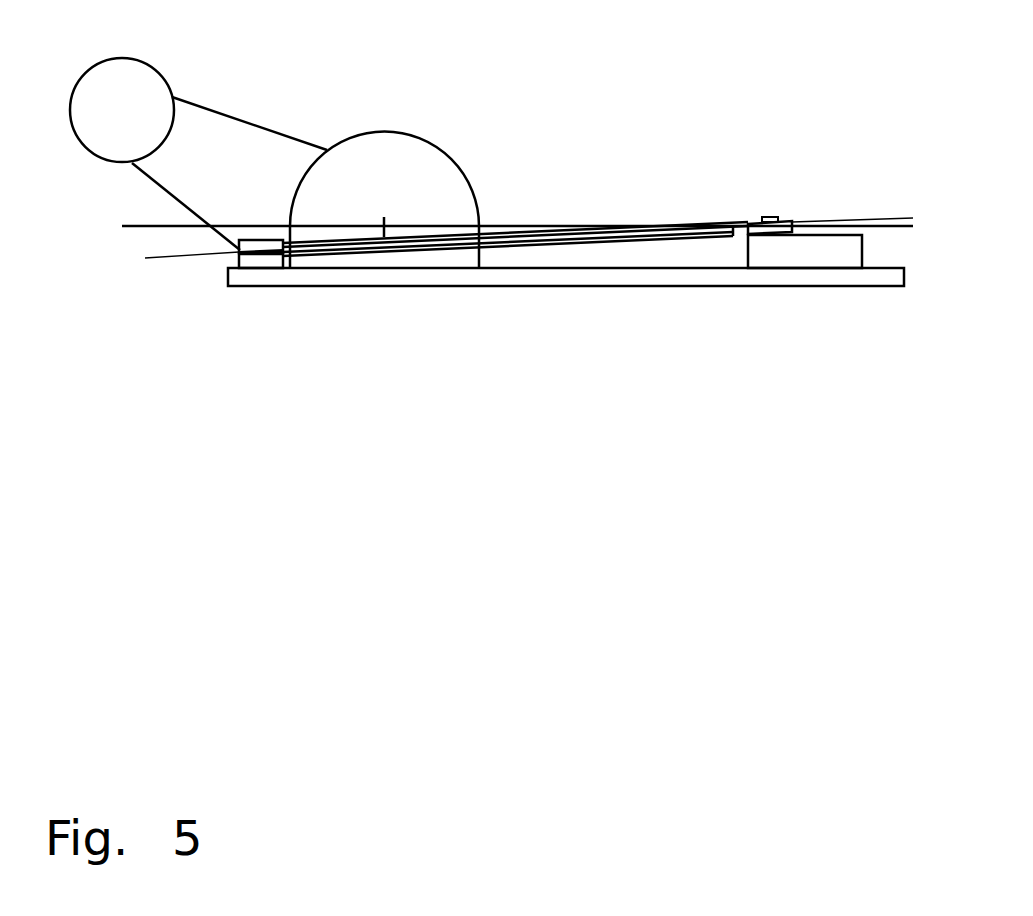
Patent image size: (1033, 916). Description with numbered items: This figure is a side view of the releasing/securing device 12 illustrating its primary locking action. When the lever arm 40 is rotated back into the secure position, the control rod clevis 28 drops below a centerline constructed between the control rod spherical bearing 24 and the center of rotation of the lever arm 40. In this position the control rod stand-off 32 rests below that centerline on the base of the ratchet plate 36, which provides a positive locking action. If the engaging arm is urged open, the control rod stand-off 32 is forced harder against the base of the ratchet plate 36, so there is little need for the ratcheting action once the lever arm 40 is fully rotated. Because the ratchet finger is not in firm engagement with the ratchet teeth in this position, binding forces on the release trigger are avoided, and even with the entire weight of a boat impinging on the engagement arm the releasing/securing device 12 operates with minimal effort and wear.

The releasing/securing device 12 is at (580, 322).
The control rod spherical bearing 24 is at (771, 218).
The control rod clevis 28 is at (262, 250).
The control rod stand-off 32 is at (262, 250).
The ratchet plate 36 is at (418, 192).
The lever arm 40 is at (246, 168).